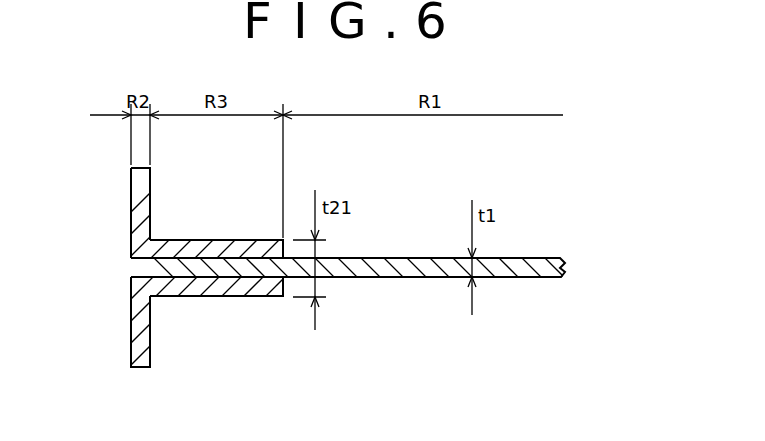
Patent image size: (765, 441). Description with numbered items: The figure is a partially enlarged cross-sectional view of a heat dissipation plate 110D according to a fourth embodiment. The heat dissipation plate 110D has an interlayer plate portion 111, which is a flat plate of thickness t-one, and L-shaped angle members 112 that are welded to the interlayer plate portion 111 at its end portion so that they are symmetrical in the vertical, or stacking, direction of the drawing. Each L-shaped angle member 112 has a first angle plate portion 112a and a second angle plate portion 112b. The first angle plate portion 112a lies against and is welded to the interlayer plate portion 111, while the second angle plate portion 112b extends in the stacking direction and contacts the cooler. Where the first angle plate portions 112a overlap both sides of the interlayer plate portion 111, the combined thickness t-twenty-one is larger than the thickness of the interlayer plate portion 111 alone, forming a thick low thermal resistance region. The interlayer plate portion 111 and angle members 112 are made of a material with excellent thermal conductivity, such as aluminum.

The heat dissipation plate 110D is at (116, 324).
The interlayer plate portion 111 is at (412, 270).
The L-shaped angle member 112 is at (207, 279).
The first angle plate portion 112a is at (226, 250).
The second angle plate portion 112b is at (140, 228).